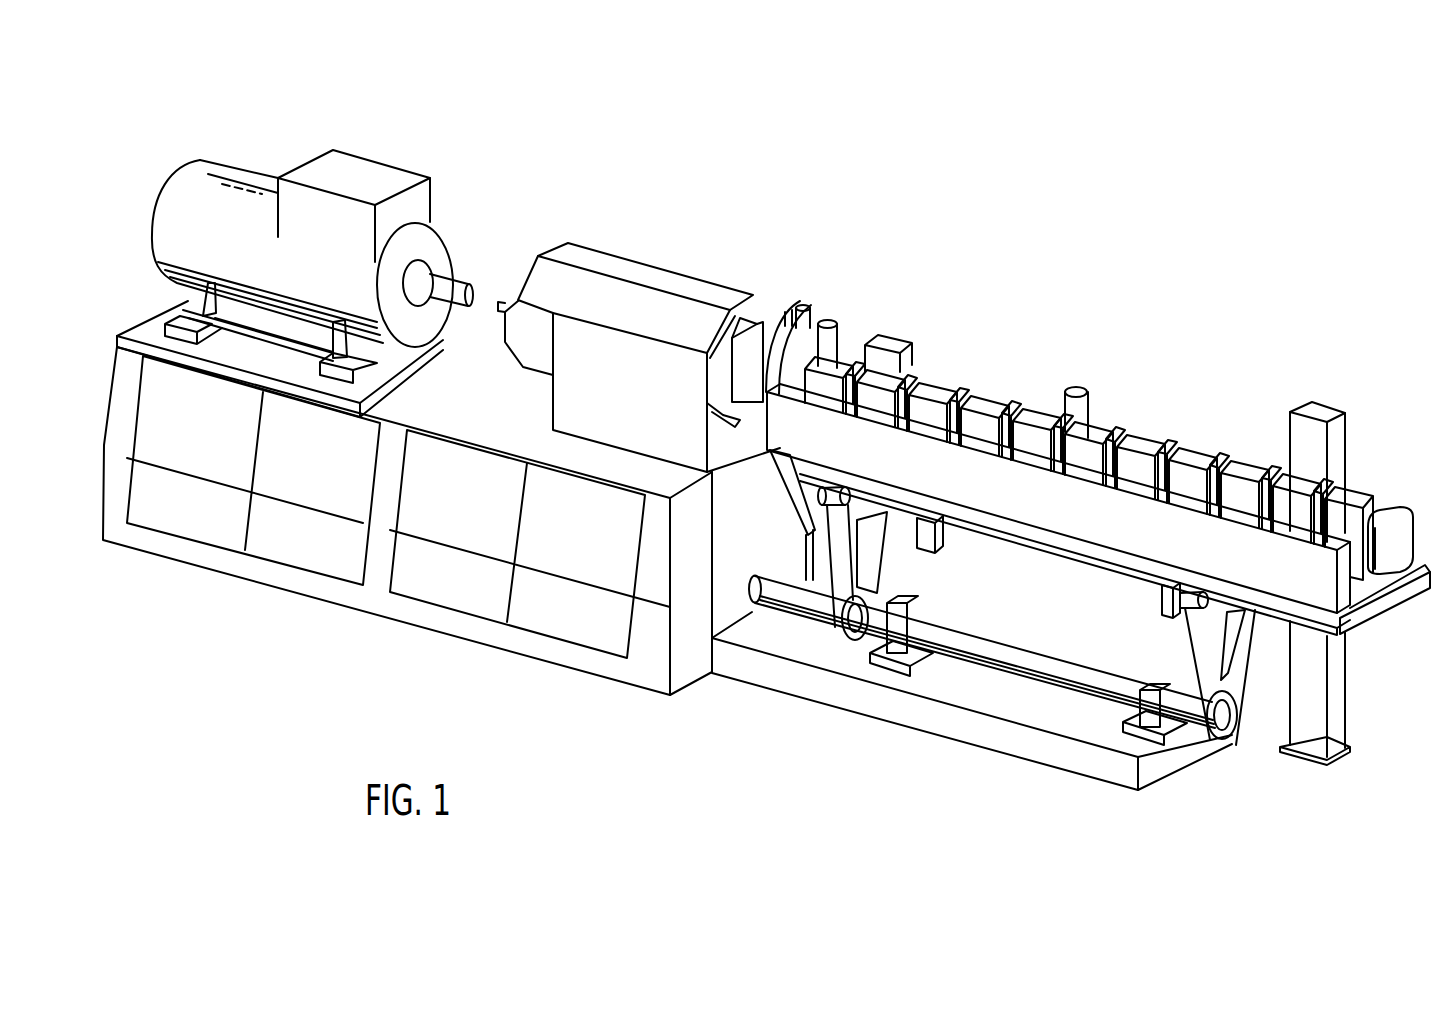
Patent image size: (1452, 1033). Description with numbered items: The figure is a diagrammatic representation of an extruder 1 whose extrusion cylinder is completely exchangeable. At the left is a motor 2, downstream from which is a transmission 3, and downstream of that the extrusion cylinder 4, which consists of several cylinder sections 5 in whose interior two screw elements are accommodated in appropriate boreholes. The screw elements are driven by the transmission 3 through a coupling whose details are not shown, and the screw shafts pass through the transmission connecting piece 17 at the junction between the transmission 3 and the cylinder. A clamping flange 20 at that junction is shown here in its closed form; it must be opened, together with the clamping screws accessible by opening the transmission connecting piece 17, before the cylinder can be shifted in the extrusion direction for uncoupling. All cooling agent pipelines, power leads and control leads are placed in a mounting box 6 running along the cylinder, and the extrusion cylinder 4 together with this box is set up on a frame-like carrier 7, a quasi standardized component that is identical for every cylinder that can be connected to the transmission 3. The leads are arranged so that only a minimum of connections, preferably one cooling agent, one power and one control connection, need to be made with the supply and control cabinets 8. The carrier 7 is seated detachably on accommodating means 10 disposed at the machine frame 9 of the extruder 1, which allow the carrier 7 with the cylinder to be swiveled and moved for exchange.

The extruder 1 is at (1132, 180).
The motor 2 is at (383, 165).
The transmission 3 is at (642, 268).
The extrusion cylinder 4 is at (1170, 410).
The cylinder sections 5 is at (963, 400).
The mounting box 6 is at (1123, 533).
The frame-like carrier 7 is at (1397, 600).
The supply and control cabinets 8 is at (453, 596).
The machine frame 9 is at (967, 728).
The accommodating means 10 is at (1243, 720).
The transmission connecting piece 17 is at (764, 318).
The clamping flange 20 is at (813, 316).